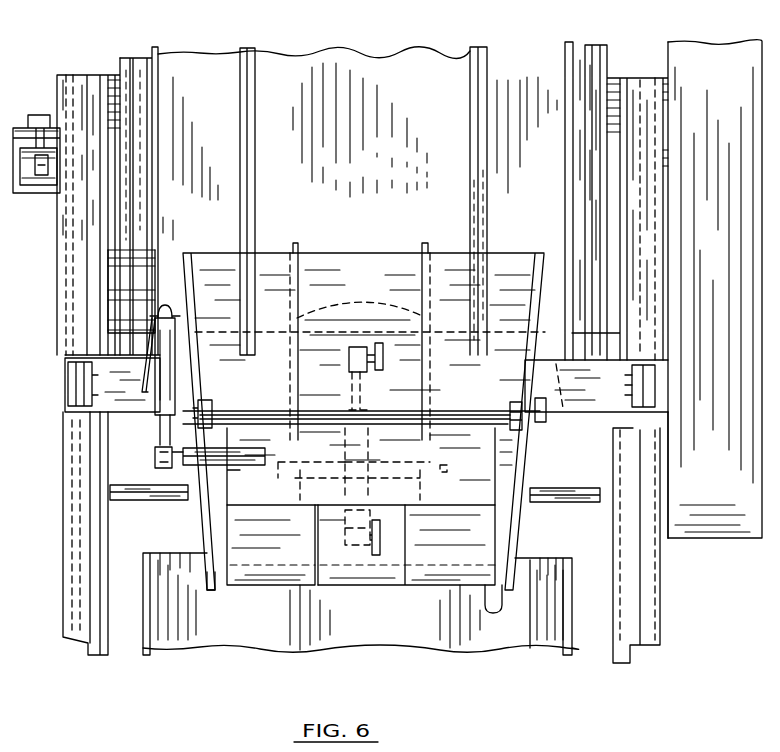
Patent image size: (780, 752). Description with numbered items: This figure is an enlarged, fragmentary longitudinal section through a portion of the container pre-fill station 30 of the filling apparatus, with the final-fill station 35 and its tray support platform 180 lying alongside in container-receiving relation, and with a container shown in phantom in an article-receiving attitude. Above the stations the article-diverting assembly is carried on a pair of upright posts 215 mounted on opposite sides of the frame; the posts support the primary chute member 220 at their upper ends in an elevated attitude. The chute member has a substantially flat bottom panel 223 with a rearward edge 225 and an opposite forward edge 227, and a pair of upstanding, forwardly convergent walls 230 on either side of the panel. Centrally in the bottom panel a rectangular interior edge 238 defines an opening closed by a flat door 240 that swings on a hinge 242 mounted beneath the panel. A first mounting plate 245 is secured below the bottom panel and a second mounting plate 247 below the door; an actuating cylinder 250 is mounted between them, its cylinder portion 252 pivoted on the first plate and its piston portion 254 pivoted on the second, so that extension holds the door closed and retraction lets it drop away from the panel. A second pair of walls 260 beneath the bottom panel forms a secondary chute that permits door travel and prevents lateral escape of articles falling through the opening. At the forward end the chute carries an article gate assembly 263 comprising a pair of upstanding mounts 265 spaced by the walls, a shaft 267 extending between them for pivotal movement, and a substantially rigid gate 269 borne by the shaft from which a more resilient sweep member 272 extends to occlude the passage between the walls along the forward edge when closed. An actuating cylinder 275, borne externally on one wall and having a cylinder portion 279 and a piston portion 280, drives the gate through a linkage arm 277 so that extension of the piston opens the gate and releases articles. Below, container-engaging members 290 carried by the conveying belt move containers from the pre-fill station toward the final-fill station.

The container pre-fill station 30 is at (370, 620).
The final-fill station 35 is at (420, 60).
The tray support platform 180 is at (318, 62).
The upright posts 215 is at (650, 378).
The primary chute member 220 is at (502, 263).
The bottom panel 223 is at (268, 250).
The rearward edge 225 is at (218, 250).
The forward edge 227 is at (213, 565).
The upstanding walls 230 is at (207, 572).
The interior edge 238 is at (445, 252).
The door 240 is at (381, 286).
The hinge 242 is at (447, 465).
The first mounting plate 245 is at (382, 540).
The second mounting plate 247 is at (385, 357).
The actuating cylinder 250 is at (345, 490).
The cylinder portion 252 is at (390, 490).
The piston portion 254 is at (367, 393).
The second pair of walls 260 is at (358, 306).
The article gate assembly 263 is at (287, 550).
The upstanding mounts 265 is at (195, 425).
The shaft 267 is at (262, 411).
The gate 269 is at (282, 443).
The sweep member 272 is at (453, 578).
The actuating cylinder 275 is at (172, 378).
The linkage arm 277 is at (200, 502).
The cylinder portion 279 is at (172, 340).
The piston portion 280 is at (158, 432).
The container-engaging members 290 is at (592, 502).